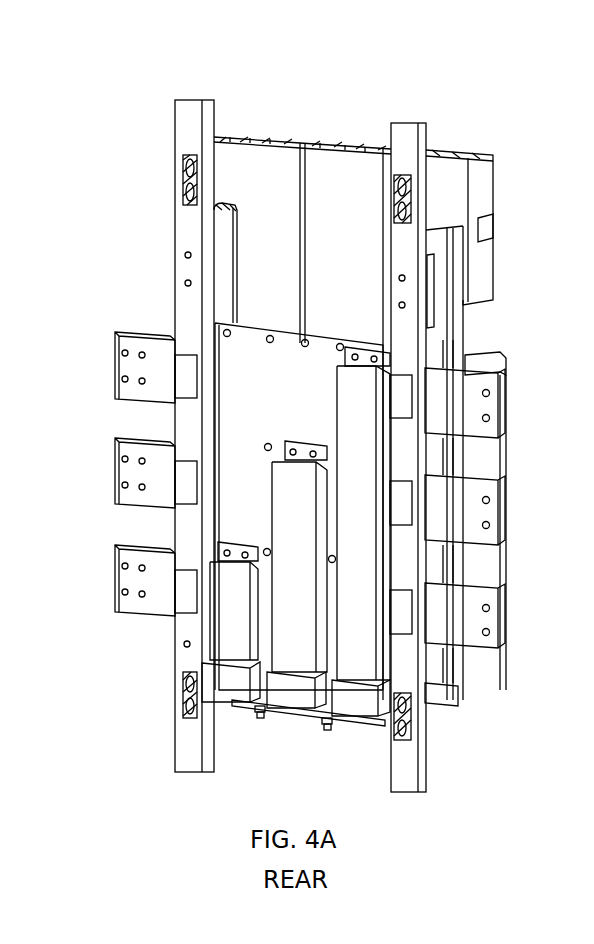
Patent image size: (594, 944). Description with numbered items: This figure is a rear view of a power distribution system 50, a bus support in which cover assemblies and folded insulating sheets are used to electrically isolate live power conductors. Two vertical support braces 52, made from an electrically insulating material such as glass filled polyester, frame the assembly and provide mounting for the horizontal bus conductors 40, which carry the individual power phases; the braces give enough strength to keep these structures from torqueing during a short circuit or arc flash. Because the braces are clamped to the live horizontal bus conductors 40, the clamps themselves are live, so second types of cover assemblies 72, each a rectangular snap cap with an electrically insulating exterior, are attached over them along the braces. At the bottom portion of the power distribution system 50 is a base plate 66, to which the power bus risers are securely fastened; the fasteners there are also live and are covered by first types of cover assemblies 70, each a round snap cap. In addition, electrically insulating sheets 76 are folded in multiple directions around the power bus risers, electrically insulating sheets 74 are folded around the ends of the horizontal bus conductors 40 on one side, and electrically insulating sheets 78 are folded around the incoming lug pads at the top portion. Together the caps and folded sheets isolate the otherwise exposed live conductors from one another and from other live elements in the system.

The power distribution system 50 is at (452, 62).
The vertical support braces 52 is at (204, 766).
The electrically insulating sheets 78 is at (270, 242).
The electrically insulating sheets 76 is at (365, 442).
The base plate 66 is at (362, 724).
The first type of cover assembly 70 is at (318, 730).
The horizontal bus conductors 40 is at (150, 368).
The second type of cover assembly 72 is at (192, 355).
The electrically insulating sheets 74 is at (460, 400).